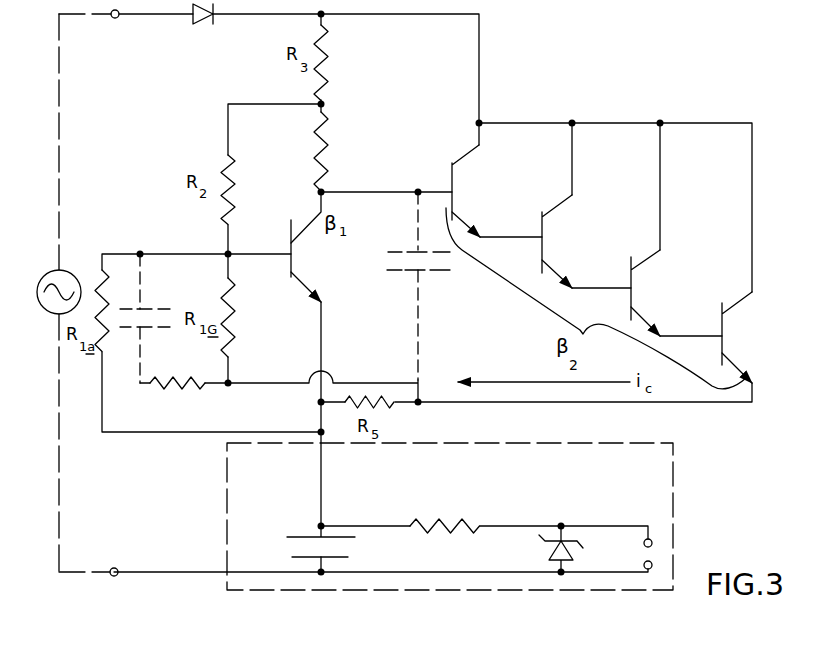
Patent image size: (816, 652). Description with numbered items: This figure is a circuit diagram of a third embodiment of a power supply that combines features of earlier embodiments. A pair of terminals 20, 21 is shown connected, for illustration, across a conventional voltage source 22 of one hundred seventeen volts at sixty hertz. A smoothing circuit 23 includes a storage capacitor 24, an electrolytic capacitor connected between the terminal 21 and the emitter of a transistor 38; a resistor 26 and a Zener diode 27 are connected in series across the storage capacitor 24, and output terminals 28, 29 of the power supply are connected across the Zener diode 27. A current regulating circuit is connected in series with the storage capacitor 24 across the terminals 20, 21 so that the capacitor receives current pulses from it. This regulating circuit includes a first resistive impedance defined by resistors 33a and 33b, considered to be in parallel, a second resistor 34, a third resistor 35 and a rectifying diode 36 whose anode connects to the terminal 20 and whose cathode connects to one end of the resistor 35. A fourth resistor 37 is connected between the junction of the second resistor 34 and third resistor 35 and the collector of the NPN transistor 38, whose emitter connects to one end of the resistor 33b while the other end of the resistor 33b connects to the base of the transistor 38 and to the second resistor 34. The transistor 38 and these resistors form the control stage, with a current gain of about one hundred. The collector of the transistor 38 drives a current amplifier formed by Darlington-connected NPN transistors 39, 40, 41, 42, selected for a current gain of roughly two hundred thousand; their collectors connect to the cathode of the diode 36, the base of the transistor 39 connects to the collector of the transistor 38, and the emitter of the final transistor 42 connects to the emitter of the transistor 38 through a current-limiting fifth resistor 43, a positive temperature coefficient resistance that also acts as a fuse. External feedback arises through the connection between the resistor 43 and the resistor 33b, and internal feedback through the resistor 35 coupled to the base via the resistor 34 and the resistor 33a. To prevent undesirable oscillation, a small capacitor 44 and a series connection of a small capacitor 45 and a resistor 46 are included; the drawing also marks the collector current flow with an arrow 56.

The terminal 20 is at (117, 18).
The terminal 21 is at (120, 565).
The voltage source 22 is at (72, 267).
The smoothing circuit 23 is at (595, 442).
The storage capacitor 24 is at (335, 548).
The resistor 26 is at (428, 525).
The Zener diode 27 is at (550, 553).
The output terminal 28 is at (655, 537).
The output terminal 29 is at (643, 566).
The resistor 33a is at (152, 241).
The resistor 33b is at (276, 376).
The second resistor 34 is at (236, 186).
The third resistor 35 is at (330, 70).
The rectifying diode 36 is at (191, 22).
The fourth resistor 37 is at (328, 133).
The transistor 38 is at (304, 256).
The transistor 39 is at (470, 198).
The transistor 40 is at (556, 245).
The transistor 41 is at (650, 297).
The transistor 42 is at (733, 340).
The current-limiting fifth resistor 43 is at (393, 407).
The capacitor 44 is at (422, 277).
The capacitor 45 is at (139, 311).
The resistor 46 is at (158, 388).
The collector current arrow 56 is at (522, 382).